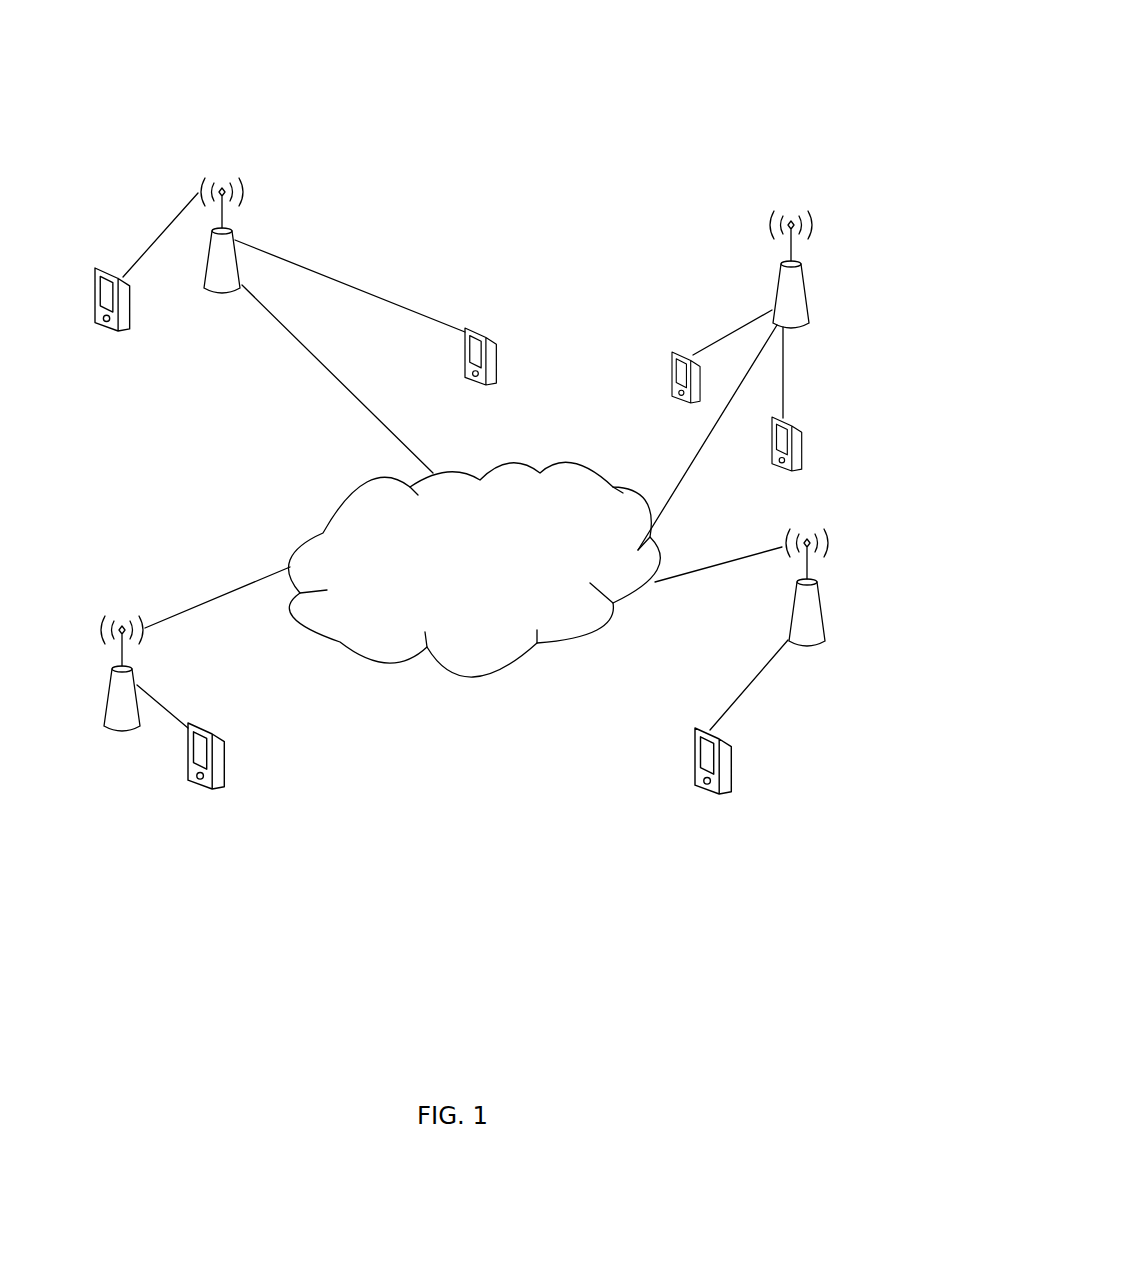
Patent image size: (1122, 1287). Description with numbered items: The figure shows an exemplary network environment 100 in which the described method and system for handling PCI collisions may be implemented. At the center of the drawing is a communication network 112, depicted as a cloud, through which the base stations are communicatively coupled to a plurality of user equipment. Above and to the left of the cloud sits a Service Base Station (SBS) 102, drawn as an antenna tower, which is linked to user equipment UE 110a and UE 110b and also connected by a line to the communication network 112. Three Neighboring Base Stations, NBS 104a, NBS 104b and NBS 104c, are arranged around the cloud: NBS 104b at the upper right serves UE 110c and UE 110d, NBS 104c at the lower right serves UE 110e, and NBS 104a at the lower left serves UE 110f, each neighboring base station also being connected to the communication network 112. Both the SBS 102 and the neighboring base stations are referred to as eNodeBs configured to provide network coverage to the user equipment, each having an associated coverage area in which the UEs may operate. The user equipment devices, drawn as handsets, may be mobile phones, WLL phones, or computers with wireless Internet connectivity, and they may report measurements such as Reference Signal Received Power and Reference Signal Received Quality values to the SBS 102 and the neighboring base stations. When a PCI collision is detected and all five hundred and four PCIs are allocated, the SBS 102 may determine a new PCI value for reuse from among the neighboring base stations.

The network environment 100 is at (598, 137).
The Service Base Station (SBS) 102 is at (240, 288).
The Neighboring Base Station (NBS) 104a is at (142, 752).
The Neighboring Base Station (NBS) 104b is at (810, 310).
The Neighboring Base Station (NBS) 104c is at (805, 645).
The User Equipment (UE) 110a is at (112, 316).
The User Equipment (UE) 110b is at (481, 373).
The User Equipment (UE) 110c is at (673, 355).
The User Equipment (UE) 110d is at (788, 461).
The User Equipment (UE) 110e is at (697, 737).
The User Equipment (UE) 110f is at (218, 790).
The communication network 112 is at (530, 595).